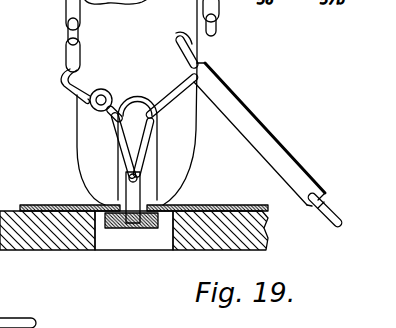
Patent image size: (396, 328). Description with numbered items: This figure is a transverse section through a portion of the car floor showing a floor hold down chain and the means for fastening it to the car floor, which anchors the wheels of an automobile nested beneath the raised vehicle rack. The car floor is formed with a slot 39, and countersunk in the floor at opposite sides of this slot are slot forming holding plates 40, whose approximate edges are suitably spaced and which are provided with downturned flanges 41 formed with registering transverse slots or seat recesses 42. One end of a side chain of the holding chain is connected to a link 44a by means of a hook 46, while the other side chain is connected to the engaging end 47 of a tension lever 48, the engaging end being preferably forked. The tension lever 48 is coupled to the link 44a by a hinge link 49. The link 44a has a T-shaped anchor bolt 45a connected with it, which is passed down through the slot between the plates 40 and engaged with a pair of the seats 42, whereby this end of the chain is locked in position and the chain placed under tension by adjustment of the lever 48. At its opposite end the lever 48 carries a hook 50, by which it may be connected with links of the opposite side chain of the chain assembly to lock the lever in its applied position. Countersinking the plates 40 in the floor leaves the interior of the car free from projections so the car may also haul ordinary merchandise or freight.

The slot 39 is at (127, 240).
The holding plates 40 is at (74, 204).
The downturned flanges 41 is at (93, 232).
The seat recesses 42 is at (158, 196).
The link 44a is at (158, 135).
The T-shaped anchor bolt 45a is at (146, 238).
The hook 46 is at (61, 75).
The engaging end 47 is at (178, 34).
The tension lever 48 is at (250, 123).
The hinge link 49 is at (166, 97).
The hook 50 is at (332, 216).